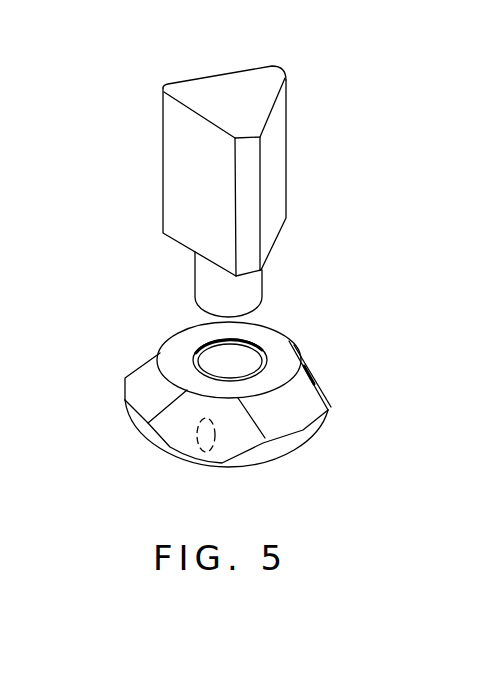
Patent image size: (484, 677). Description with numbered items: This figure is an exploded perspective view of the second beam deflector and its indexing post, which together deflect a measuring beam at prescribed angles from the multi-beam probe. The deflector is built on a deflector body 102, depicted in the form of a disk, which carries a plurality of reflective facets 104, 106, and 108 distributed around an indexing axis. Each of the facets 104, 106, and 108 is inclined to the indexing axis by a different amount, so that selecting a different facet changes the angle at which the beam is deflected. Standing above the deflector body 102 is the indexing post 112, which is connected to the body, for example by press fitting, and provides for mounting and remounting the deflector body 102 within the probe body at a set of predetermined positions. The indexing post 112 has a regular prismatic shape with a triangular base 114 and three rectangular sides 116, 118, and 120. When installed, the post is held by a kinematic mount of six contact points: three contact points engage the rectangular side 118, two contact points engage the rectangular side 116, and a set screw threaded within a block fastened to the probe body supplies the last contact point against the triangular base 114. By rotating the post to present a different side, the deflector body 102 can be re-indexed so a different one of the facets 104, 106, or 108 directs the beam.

The deflector body 102 is at (244, 405).
The facet 104 is at (163, 455).
The facet 106 is at (317, 383).
The facet 108 is at (173, 332).
The indexing post 112 is at (221, 147).
The triangular base 114 is at (250, 107).
The rectangular side 116 is at (187, 203).
The rectangular side 118 is at (213, 72).
The rectangular side 120 is at (272, 193).